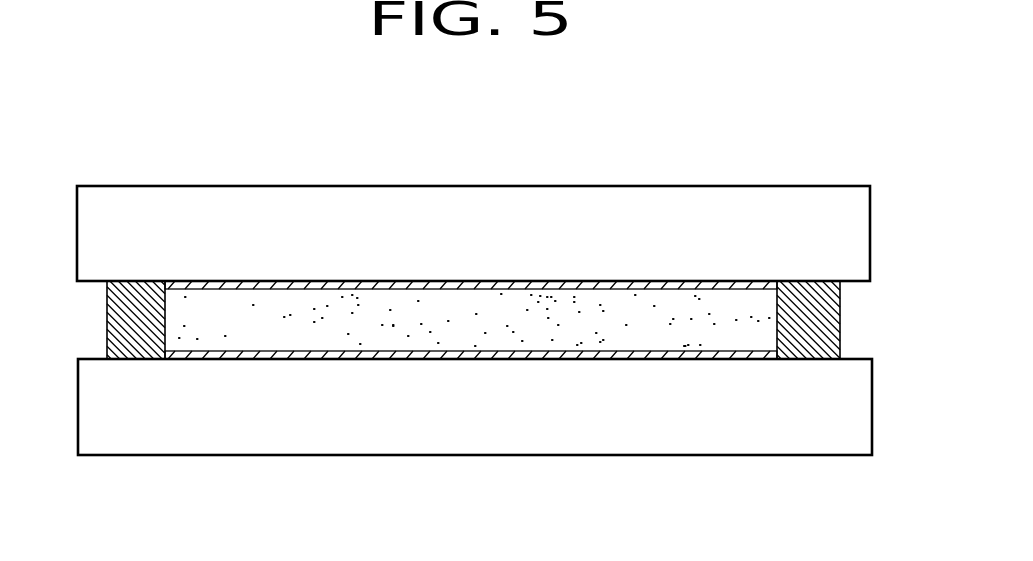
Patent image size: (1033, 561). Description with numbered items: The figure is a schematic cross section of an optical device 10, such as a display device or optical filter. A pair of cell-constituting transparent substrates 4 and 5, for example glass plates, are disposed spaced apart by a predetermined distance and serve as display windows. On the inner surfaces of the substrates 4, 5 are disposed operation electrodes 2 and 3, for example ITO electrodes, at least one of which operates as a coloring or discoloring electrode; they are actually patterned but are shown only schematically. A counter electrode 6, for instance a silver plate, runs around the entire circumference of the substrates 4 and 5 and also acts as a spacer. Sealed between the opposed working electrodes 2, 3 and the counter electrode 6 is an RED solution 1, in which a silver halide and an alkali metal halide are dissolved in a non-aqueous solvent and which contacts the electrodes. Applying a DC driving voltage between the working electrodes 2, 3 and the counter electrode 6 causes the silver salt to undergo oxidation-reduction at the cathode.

The optical device 10 is at (486, 181).
The RED solution 1 is at (750, 308).
The operation electrode 2 is at (752, 289).
The operation electrode 3 is at (755, 359).
The transparent substrate 4 is at (473, 233).
The transparent substrate 5 is at (475, 407).
The counter electrode 6 is at (117, 322).